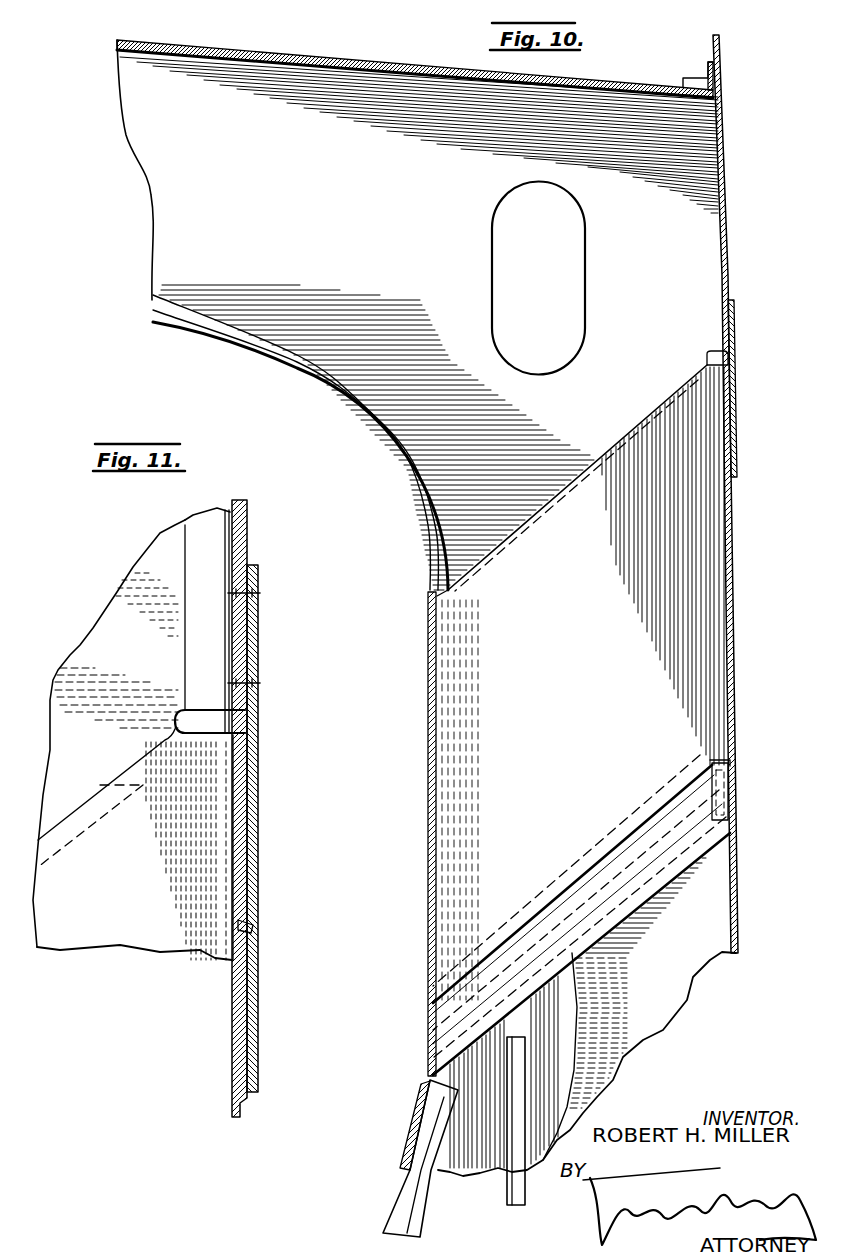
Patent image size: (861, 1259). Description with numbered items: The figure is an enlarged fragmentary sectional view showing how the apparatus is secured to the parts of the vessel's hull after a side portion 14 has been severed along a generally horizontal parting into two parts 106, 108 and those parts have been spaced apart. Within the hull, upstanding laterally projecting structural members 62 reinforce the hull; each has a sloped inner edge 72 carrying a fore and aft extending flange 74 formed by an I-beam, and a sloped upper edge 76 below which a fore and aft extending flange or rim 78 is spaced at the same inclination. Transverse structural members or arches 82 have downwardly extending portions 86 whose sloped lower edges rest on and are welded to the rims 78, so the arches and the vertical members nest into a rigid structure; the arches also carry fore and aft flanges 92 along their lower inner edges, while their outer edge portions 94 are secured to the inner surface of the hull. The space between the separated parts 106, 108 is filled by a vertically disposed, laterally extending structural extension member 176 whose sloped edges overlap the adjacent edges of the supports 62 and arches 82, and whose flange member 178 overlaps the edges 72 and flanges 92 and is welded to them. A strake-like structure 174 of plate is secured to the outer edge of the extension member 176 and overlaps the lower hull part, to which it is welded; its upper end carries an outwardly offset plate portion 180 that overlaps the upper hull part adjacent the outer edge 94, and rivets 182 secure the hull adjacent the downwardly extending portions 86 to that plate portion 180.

In FIG. 10, the side portions 14 is at (739, 911).
In FIG. 11, the side portions 14 is at (249, 546).
In FIG. 10, the structural members 62 is at (666, 990).
In FIG. 11, the structural members 62 is at (210, 788).
In FIG. 10, the inner edge 72 is at (410, 1133).
In FIG. 10, the flanges 74 is at (393, 1203).
In FIG. 10, the upper edge 76 is at (636, 836).
In FIG. 10, the flanges or rims 78 is at (540, 993).
In FIG. 10, the transverse structural members 82 is at (155, 305).
In FIG. 10, the downwardly extending portions 86 is at (640, 357).
In FIG. 11, the downwardly extending portions 86 is at (90, 657).
In FIG. 10, the flanges 92 is at (298, 373).
In FIG. 10, the outer edge portions 94 is at (717, 258).
In FIG. 10, the part 106 is at (737, 162).
In FIG. 10, the part 108 is at (747, 882).
In FIG. 10, the strake-like structure 174 is at (733, 556).
In FIG. 11, the strake-like structure 174 is at (238, 904).
In FIG. 10, the structural extension members 176 is at (553, 642).
In FIG. 11, the structural extension members 176 is at (147, 916).
In FIG. 10, the flange member 178 is at (426, 770).
In FIG. 11, the outwardly offset plate portion 180 is at (260, 843).
In FIG. 11, the rivets 182 is at (258, 596).